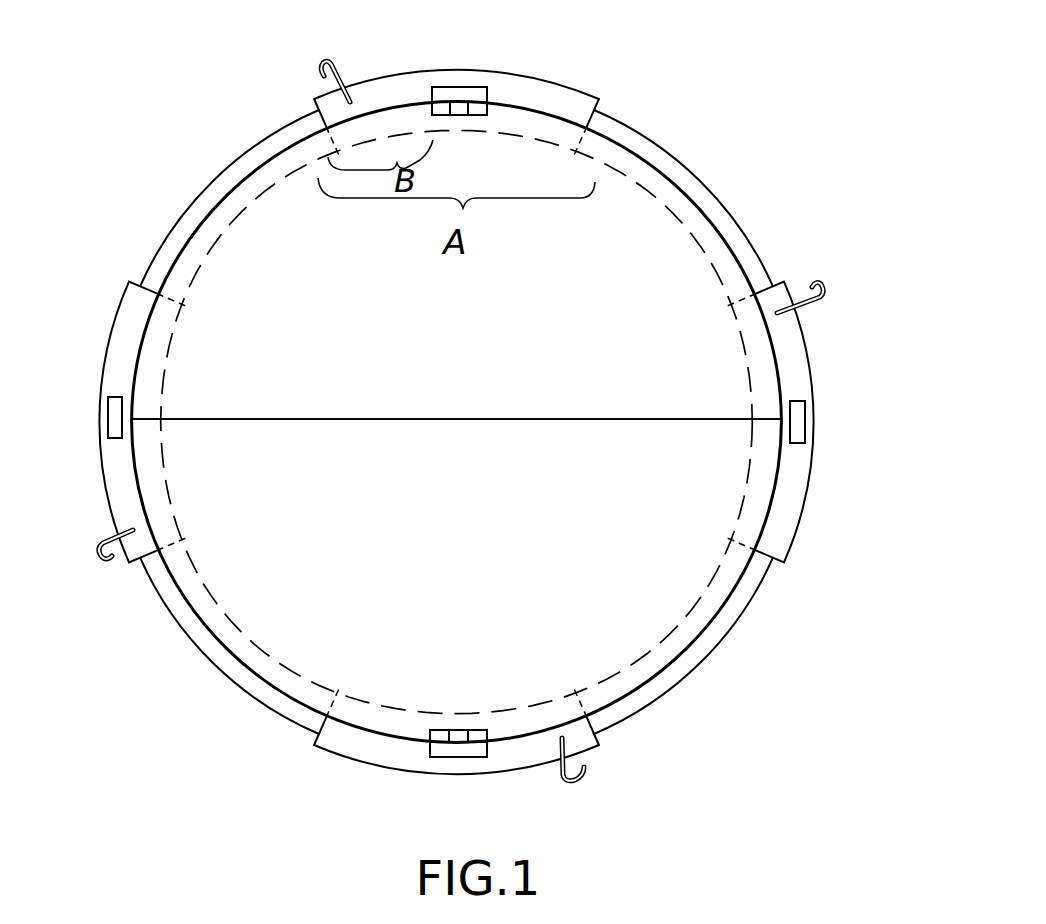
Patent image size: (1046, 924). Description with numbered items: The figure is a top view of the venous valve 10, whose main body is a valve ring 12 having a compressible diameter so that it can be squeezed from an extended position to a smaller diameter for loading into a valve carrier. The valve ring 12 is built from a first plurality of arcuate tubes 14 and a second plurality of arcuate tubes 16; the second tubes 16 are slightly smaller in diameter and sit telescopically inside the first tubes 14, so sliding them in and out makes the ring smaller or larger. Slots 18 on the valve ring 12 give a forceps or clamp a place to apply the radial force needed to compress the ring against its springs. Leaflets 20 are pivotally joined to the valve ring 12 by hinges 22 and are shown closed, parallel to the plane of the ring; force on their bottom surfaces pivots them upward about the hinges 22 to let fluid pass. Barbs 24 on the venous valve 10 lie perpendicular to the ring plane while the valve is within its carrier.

The venous valve 10 is at (182, 153).
The valve ring 12 is at (762, 202).
The first plurality of arcuate tubes 14 is at (455, 70).
The second plurality of arcuate tubes 16 is at (268, 134).
The slots 18 is at (116, 420).
The leaflets 20 is at (612, 222).
The hinges 22 is at (454, 118).
The barbs 24 is at (338, 64).